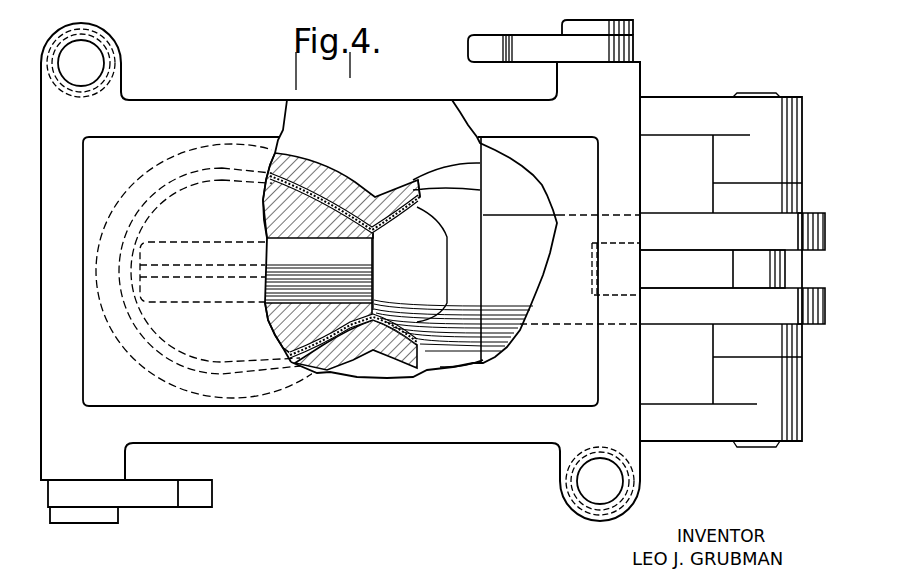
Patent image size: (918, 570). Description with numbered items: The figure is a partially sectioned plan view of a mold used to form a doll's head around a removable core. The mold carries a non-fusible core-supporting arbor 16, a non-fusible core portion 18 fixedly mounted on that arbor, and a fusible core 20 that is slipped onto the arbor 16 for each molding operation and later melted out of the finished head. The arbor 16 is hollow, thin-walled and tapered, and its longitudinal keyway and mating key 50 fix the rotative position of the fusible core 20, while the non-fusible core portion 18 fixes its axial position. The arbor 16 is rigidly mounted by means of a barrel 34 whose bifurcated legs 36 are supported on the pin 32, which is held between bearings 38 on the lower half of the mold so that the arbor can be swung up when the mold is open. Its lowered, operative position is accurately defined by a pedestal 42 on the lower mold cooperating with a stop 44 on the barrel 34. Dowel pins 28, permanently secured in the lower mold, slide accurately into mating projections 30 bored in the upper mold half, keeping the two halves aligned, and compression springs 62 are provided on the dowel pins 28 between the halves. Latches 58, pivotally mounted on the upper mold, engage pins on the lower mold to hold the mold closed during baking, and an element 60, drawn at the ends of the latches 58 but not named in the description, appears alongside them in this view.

The core-supporting arbor 16 is at (290, 290).
The non-fusible core portion 18 is at (453, 343).
The fusible core 20 is at (320, 347).
The dowel pins 28 is at (77, 50).
The mating projections 30 is at (40, 86).
The pin (pivot axis) 32 is at (757, 447).
The barrel 34 is at (535, 220).
The legs 36 is at (672, 223).
The bearings 38 is at (723, 110).
The pedestal 42 is at (608, 272).
The stop 44 is at (615, 243).
The keyway and mating key 50 is at (277, 268).
The latches 58 is at (517, 43).
The nut 60 is at (602, 27).
The compression springs 62 is at (113, 43).